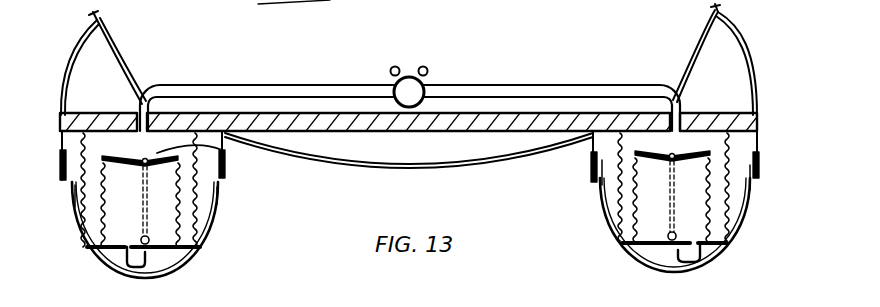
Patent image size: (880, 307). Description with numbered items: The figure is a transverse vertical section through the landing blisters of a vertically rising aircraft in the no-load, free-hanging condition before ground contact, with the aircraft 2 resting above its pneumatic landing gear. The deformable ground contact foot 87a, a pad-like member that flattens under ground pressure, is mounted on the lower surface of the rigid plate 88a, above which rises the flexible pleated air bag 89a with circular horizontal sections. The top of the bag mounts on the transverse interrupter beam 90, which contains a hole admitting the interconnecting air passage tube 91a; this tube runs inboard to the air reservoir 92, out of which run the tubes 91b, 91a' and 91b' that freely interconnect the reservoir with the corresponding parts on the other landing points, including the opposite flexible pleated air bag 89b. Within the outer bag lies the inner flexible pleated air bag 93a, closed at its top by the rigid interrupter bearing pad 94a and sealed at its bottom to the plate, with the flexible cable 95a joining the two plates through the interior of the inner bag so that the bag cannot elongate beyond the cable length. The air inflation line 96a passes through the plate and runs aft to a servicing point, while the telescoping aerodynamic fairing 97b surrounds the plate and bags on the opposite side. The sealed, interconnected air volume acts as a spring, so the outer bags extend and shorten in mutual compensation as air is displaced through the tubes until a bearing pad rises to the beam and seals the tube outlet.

The flexible strip 2 is at (437, 160).
The transverse interrupter beam 90 is at (108, 113).
The interconnecting air passage tube 91a is at (274, 94).
The tube 91b is at (544, 94).
The tube 91a' is at (373, 63).
The tube 91b' is at (449, 63).
The air reservoir 92 is at (409, 80).
The deformable ground contact foot 87a is at (110, 270).
The rigid plate 88a is at (107, 253).
The flexible pleated air bag 89a is at (87, 216).
The flexible pleated air bag 89b is at (733, 143).
The flexible pleated air bag 93a is at (176, 202).
The rigid interrupter bearing pad 94a is at (222, 150).
The flexible cable 95a is at (147, 222).
The air inflation line 96a is at (133, 270).
The telescoping aerodynamic fairing 97b is at (592, 167).